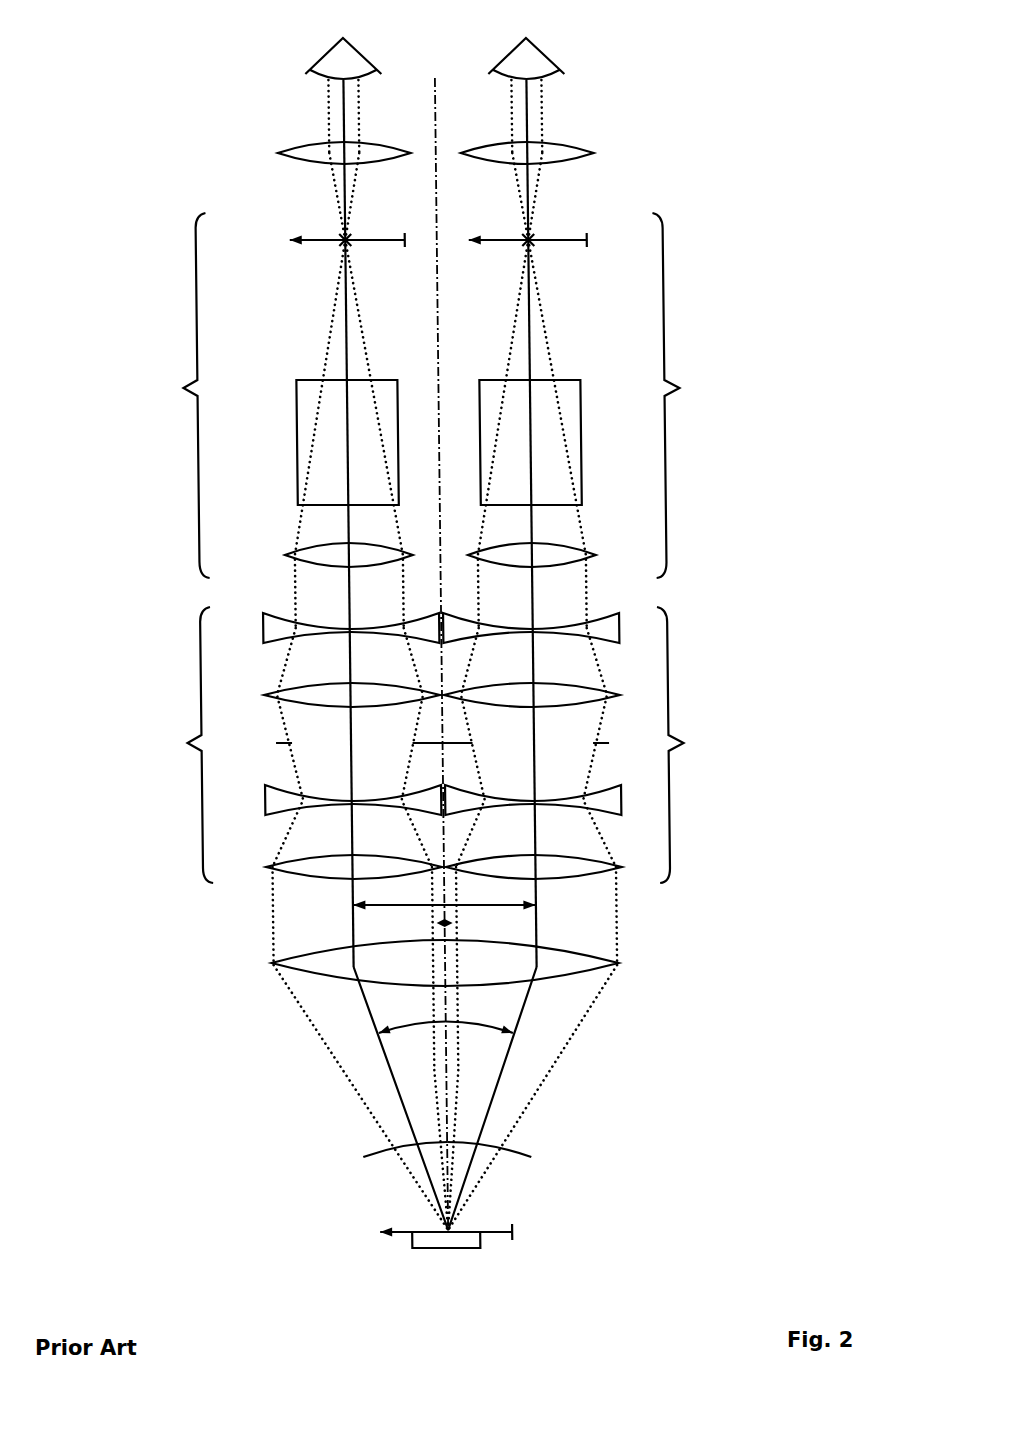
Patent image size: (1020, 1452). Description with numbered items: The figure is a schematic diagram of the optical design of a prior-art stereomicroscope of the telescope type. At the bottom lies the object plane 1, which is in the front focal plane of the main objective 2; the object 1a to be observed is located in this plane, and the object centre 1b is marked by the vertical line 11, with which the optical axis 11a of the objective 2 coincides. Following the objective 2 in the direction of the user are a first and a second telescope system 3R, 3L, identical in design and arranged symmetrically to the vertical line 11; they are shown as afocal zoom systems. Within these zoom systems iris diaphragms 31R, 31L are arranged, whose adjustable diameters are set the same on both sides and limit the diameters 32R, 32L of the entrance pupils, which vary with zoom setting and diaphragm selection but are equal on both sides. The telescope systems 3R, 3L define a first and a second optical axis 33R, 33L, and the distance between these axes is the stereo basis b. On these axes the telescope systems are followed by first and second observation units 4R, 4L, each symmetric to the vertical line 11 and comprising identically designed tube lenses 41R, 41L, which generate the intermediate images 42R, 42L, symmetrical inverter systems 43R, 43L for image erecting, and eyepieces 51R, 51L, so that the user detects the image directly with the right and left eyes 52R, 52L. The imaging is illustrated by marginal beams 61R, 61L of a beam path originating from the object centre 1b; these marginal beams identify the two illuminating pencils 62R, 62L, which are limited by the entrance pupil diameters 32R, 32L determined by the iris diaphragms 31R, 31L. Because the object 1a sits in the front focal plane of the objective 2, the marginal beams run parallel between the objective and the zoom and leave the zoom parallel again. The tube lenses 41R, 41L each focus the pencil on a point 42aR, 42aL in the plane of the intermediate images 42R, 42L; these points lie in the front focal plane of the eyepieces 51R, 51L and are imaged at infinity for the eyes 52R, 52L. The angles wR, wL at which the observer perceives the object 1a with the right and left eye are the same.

The object plane 1 is at (383, 1225).
The object 1a is at (433, 1240).
The object centre 1b is at (447, 1230).
The main objective 2 is at (258, 968).
The second telescope system 3L is at (298, 745).
The first telescope system 3R is at (583, 745).
The iris diaphragm 31L is at (270, 746).
The iris diaphragm 31R is at (598, 746).
The diameter of the entrance pupil 32L is at (252, 924).
The diameter of the entrance pupil 32R is at (616, 924).
The second optical axis 33L is at (340, 668).
The first optical axis 33R is at (528, 668).
The second observation unit 4L is at (277, 523).
The first observation unit 4R is at (599, 523).
The tube lens 41L is at (296, 556).
The tube lens 41R is at (572, 556).
The intermediate image 42L is at (310, 242).
The intermediate image 42R is at (556, 242).
The point 42aL is at (340, 250).
The point 42aR is at (528, 250).
The symmetrical inverter system 43L is at (298, 400).
The symmetrical inverter system 43R is at (570, 400).
The eyepiece 51L is at (296, 152).
The eyepiece 51R is at (572, 152).
The left eye 52L is at (327, 59).
The right eye 52R is at (540, 59).
The vertical line 11 is at (434, 79).
The optical axis of the objective 11a is at (446, 967).
The marginal beam 61L is at (394, 1178).
The marginal beam 61R is at (474, 1178).
The illuminating pencil 62L is at (357, 1088).
The illuminating pencil 62R is at (512, 1088).
The stereo basis b is at (450, 903).
The angle wL is at (368, 1034).
The angle wR is at (500, 1034).